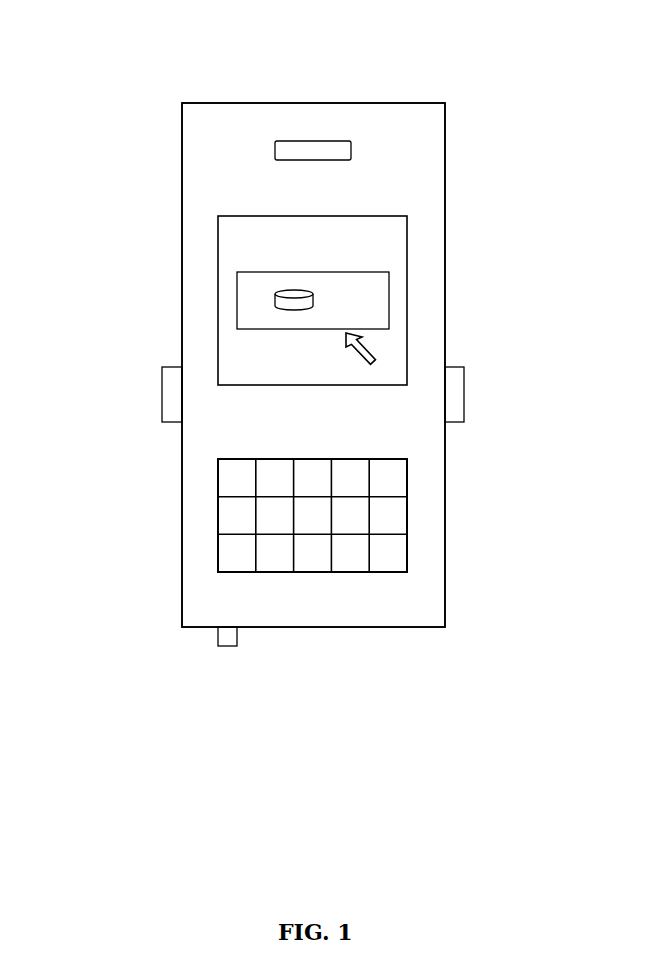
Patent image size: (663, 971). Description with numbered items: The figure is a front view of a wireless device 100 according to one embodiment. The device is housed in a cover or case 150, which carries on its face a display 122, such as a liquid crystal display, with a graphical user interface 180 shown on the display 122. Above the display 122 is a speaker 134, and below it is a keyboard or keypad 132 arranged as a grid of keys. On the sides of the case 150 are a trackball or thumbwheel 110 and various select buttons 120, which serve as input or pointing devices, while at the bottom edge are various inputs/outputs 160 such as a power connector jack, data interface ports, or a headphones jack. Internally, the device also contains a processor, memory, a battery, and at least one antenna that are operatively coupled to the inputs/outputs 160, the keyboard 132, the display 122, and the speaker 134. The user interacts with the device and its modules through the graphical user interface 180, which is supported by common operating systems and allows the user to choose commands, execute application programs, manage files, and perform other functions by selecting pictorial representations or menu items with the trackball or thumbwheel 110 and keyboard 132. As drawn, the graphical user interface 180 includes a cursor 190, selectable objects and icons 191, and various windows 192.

The wireless device 100 is at (329, 26).
The trackball or thumbwheel 110 is at (464, 403).
The select buttons 120 is at (162, 402).
The display 122 is at (257, 245).
The keyboard 132 is at (238, 515).
The speaker 134 is at (371, 143).
The cover or case 150 is at (440, 206).
The inputs/outputs 160 is at (219, 665).
The graphical user interface 180 is at (369, 283).
The cursor 190 is at (370, 347).
The selectable objects and icons 191 is at (275, 302).
The windows 192 is at (369, 302).